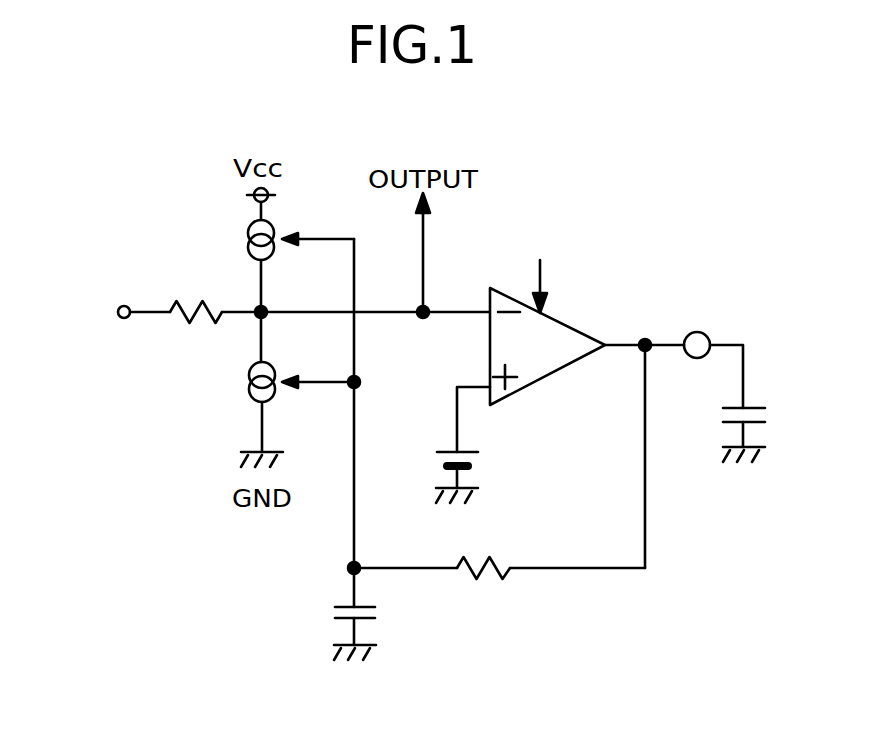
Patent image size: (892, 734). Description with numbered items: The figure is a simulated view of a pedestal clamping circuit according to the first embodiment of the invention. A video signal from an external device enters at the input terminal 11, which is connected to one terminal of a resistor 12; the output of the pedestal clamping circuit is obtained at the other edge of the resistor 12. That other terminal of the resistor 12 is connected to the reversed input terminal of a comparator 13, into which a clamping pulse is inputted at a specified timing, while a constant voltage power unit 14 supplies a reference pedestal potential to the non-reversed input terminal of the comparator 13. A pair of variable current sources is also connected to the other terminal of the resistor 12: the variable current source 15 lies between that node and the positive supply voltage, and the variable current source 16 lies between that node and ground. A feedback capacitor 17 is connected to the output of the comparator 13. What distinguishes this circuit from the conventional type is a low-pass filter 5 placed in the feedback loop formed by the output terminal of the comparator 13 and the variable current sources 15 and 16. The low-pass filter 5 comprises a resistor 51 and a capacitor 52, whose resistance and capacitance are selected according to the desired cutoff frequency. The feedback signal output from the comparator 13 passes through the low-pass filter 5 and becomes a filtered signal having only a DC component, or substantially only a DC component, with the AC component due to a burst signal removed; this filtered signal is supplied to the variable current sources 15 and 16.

The low-pass filter 5 is at (555, 611).
The input terminal 11 is at (122, 305).
The resistor 12 is at (172, 322).
The comparator 13 is at (567, 332).
The constant voltage power unit 14 is at (483, 463).
The variable current source 15 is at (250, 240).
The variable current source 16 is at (250, 382).
The feedback capacitor 17 is at (722, 423).
The resistor 51 is at (498, 580).
The capacitor 52 is at (367, 625).